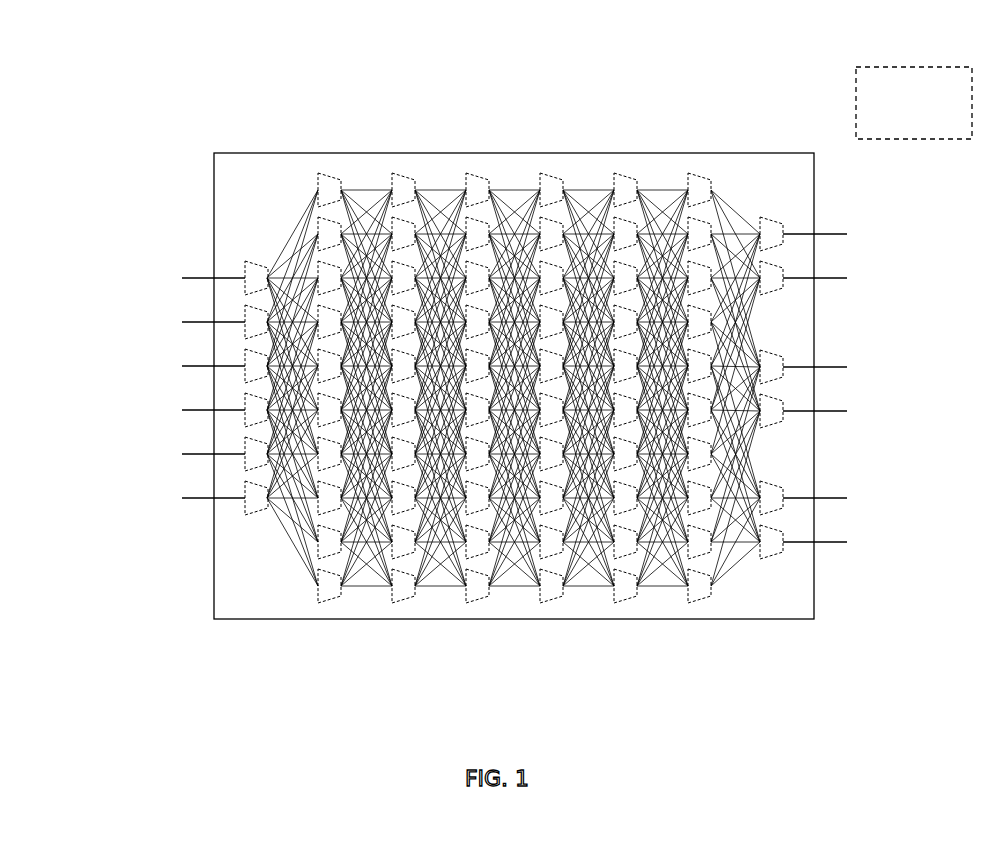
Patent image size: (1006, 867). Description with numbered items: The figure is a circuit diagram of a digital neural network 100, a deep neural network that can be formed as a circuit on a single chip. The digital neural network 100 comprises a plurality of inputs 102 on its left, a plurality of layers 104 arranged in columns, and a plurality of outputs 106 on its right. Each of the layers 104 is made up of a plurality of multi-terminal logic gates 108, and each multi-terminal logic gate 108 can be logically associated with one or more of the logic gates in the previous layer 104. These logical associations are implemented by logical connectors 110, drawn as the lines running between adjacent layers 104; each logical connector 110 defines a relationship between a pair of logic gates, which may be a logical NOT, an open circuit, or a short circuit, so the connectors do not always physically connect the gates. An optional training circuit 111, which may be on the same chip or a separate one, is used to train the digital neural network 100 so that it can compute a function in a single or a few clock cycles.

The digital neural network 100 is at (314, 152).
The inputs 102 is at (158, 260).
The layers 104 is at (513, 401).
The outputs 106 is at (877, 225).
The multi-terminal logic gate 108 is at (474, 600).
The logical connectors 110 is at (434, 162).
The training circuit 111 is at (882, 66).